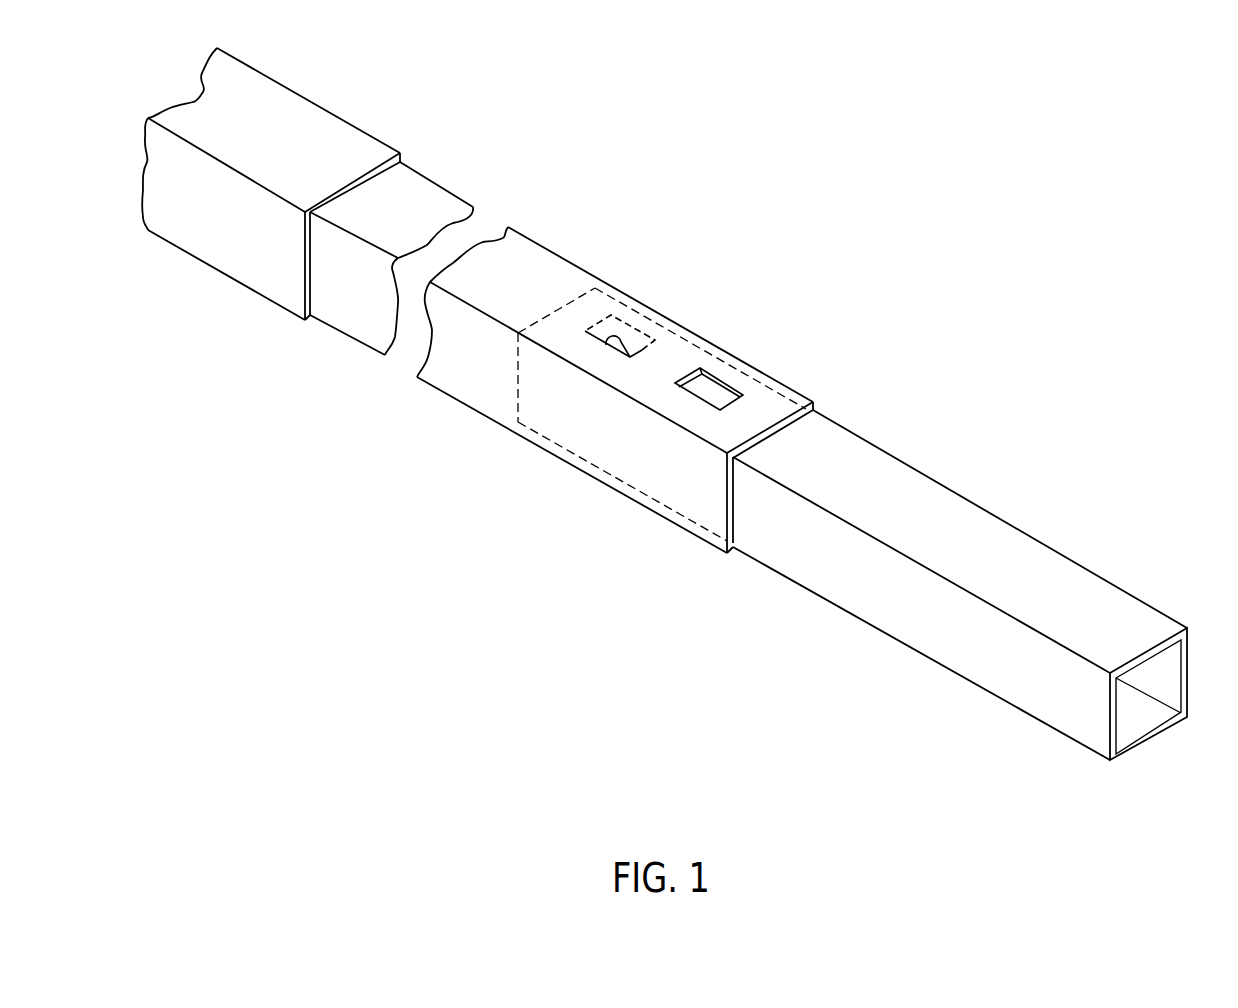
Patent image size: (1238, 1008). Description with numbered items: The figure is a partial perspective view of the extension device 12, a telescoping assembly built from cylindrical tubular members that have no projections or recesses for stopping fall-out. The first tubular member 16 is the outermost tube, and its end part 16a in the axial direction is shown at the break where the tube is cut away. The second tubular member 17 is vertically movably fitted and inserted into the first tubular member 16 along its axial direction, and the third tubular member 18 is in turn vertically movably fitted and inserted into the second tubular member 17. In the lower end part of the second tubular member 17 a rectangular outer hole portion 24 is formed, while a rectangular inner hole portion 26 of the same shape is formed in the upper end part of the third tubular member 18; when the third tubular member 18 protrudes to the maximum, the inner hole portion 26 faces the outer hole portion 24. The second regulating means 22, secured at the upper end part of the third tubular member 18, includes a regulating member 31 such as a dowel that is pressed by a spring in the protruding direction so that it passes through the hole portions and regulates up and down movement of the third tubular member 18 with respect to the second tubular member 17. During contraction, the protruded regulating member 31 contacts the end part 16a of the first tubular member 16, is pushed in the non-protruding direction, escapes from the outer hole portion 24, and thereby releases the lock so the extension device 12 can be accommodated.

The extension device 12 is at (735, 152).
The first tubular member 16 is at (307, 201).
The end part in the axial direction of the first tubular member 16a is at (353, 183).
The second tubular member 17 is at (617, 378).
The third tubular member 18 is at (977, 497).
The second regulating means 22 is at (657, 340).
The outer hole portion 24 is at (718, 393).
The inner hole portion 26 is at (618, 345).
The regulating member 31 is at (642, 335).